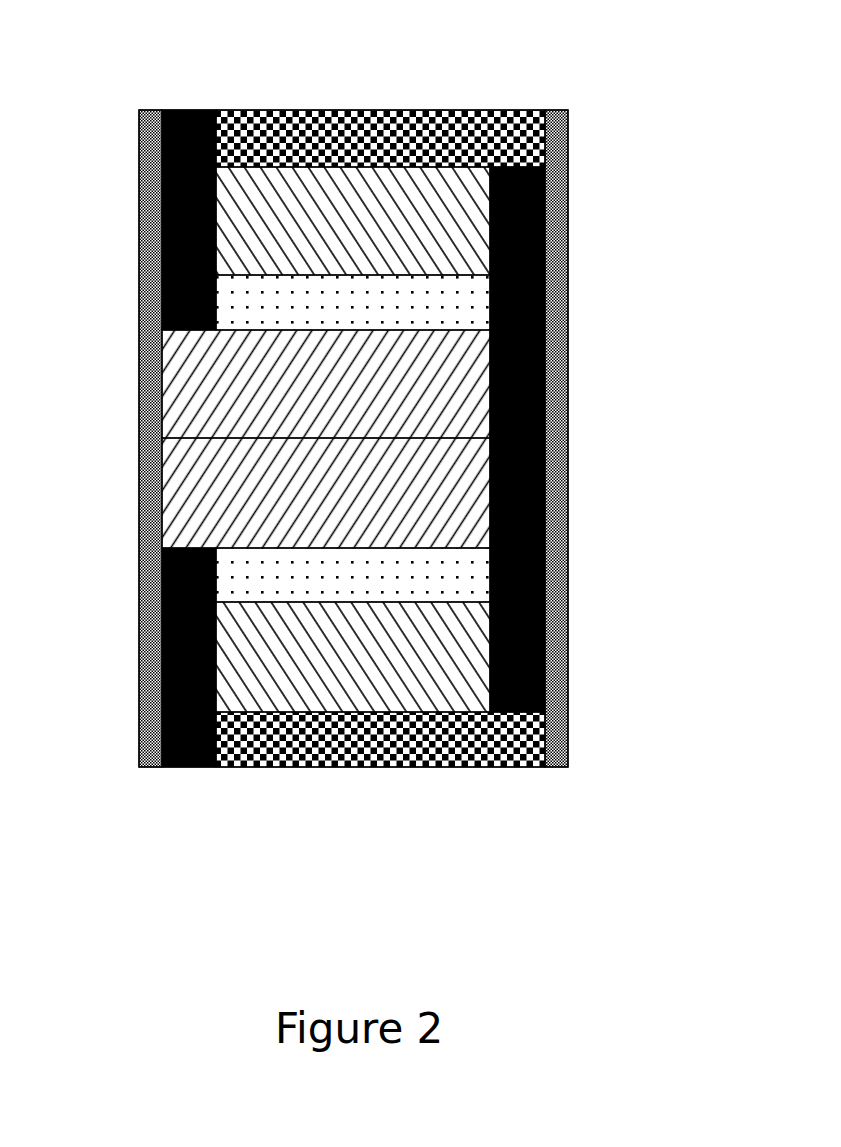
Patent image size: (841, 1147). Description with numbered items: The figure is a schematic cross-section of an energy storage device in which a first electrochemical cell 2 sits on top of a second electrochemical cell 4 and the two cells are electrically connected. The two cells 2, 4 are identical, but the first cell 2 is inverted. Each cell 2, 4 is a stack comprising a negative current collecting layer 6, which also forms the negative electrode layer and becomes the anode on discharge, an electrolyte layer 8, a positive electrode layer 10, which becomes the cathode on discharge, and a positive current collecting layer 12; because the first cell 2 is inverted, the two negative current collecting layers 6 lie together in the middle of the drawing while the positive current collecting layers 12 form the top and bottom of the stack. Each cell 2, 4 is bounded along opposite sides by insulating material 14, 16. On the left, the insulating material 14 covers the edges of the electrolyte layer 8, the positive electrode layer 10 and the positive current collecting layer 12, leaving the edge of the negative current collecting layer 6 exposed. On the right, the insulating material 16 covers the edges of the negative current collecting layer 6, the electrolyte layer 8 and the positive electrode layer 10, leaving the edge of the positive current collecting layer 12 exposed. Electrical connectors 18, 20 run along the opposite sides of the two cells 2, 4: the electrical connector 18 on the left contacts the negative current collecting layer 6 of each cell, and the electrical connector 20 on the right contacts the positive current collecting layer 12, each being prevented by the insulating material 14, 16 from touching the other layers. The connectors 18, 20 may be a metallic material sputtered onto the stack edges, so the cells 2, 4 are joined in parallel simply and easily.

The first electrochemical cell 2 is at (612, 230).
The second electrochemical cell 4 is at (600, 565).
The negative current collecting layer 6 is at (185, 413).
The electrolyte layer 8 is at (243, 323).
The positive electrode layer 10 is at (458, 190).
The positive current collecting layer 12 is at (272, 125).
The insulating material 14 is at (158, 212).
The insulating material 16 is at (550, 190).
The electrical connector 18 is at (152, 738).
The electrical connector 20 is at (568, 745).